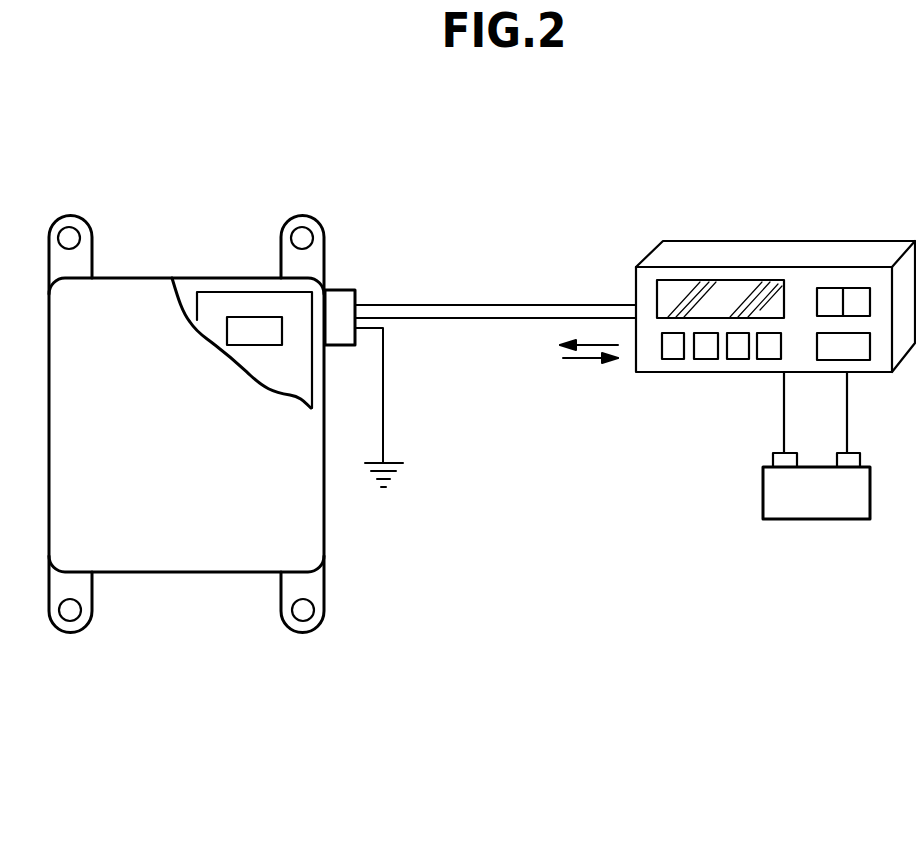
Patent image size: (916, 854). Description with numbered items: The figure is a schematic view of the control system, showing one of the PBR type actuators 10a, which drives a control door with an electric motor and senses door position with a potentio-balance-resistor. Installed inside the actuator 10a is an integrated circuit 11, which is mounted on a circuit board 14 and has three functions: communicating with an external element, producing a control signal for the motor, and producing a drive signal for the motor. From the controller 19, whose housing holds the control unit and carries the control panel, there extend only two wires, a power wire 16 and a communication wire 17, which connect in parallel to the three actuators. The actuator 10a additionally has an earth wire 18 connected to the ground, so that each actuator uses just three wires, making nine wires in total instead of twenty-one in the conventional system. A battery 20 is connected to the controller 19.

The actuator 10a is at (143, 273).
The integrated circuit 11 is at (282, 345).
The circuit board 14 is at (228, 300).
The power wire 16 is at (499, 303).
The communication wire 17 is at (498, 327).
The earth wire 18 is at (383, 428).
The controller 19 is at (785, 246).
The battery 20 is at (772, 497).